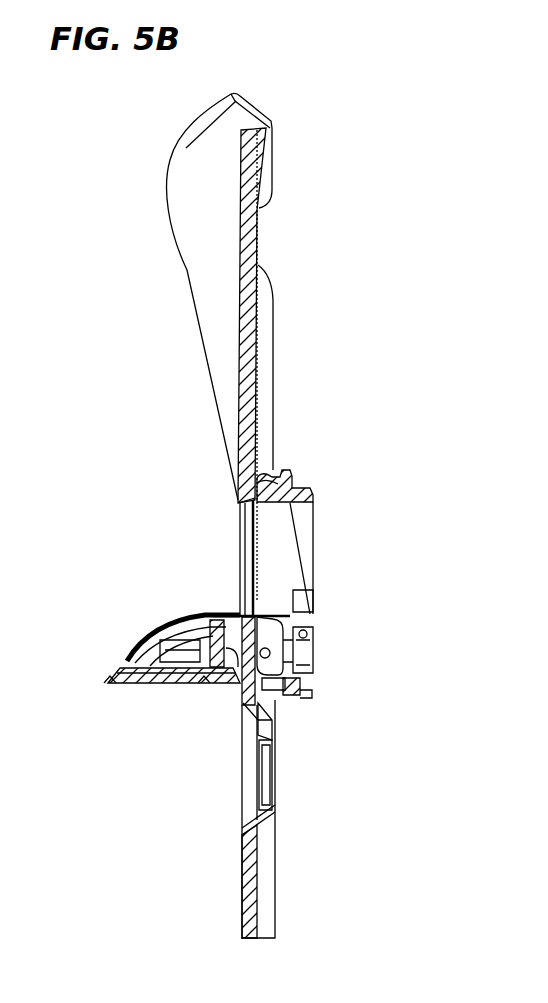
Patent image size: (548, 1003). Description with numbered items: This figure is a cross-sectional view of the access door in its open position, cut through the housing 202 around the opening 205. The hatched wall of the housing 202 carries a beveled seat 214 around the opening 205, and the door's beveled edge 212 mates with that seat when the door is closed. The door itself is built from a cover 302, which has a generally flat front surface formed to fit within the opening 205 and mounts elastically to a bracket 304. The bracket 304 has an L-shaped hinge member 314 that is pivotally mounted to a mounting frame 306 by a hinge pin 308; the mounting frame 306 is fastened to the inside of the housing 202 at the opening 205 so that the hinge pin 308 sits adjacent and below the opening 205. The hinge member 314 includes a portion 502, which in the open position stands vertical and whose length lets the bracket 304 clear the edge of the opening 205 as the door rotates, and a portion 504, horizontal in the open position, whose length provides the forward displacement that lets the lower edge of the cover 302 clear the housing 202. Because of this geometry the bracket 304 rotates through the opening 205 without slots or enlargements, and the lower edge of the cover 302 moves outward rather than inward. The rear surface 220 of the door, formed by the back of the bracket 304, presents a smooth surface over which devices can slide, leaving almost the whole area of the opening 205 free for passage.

The housing 202 is at (182, 196).
The opening 205 is at (207, 530).
The beveled edge 212 is at (108, 672).
The beveled seat 214 is at (238, 512).
The rear surface 220 is at (132, 656).
The cover 302 is at (140, 678).
The bracket 304 is at (213, 612).
The mounting frame 306 is at (288, 470).
The hinge pin 308 is at (317, 653).
The L-shaped hinge member 314 is at (290, 614).
The horizontal portion 502 is at (307, 634).
The vertical portion 504 is at (283, 612).